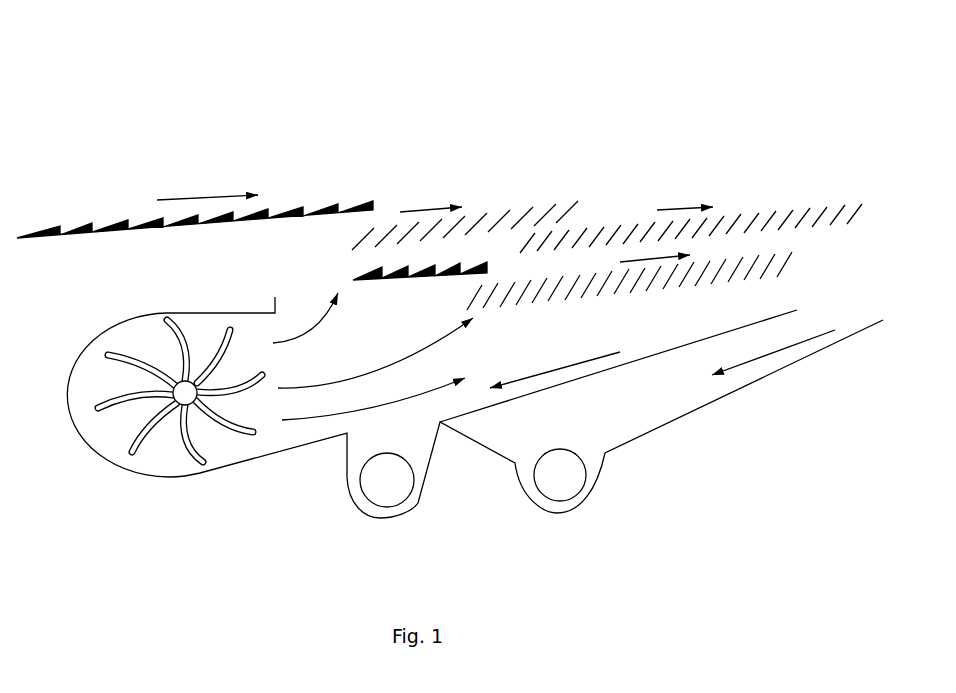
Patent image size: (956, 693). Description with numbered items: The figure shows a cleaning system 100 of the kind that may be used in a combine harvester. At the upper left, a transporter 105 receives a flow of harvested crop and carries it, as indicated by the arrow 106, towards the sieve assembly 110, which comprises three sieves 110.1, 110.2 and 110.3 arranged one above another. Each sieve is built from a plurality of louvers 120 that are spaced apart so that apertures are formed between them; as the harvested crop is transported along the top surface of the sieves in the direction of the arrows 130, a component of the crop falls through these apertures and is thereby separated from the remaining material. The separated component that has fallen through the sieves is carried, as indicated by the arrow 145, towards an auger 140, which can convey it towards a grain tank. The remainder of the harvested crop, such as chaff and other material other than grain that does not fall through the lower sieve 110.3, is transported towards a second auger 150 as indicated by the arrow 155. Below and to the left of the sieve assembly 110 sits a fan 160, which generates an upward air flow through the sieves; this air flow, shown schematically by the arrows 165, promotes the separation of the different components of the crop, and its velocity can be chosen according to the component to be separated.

The cleaning system 100 is at (267, 82).
The transporter 105 is at (90, 227).
The arrow indicating transport of harvested crop 106 is at (197, 198).
The sieve assembly 110 is at (655, 185).
The first sieve 110.1 is at (490, 220).
The second sieve 110.2 is at (753, 218).
The lower sieve 110.3 is at (570, 292).
The louvers 120 is at (623, 233).
The arrows indicating crop transport 130 is at (420, 210).
The auger 140 is at (385, 485).
The arrow indicating transport of separated component 145 is at (530, 378).
The second auger 150 is at (563, 480).
The arrow indicating transport of remainder 155 is at (752, 362).
The fan 160 is at (153, 417).
The arrows indicating air flow 165 is at (320, 333).